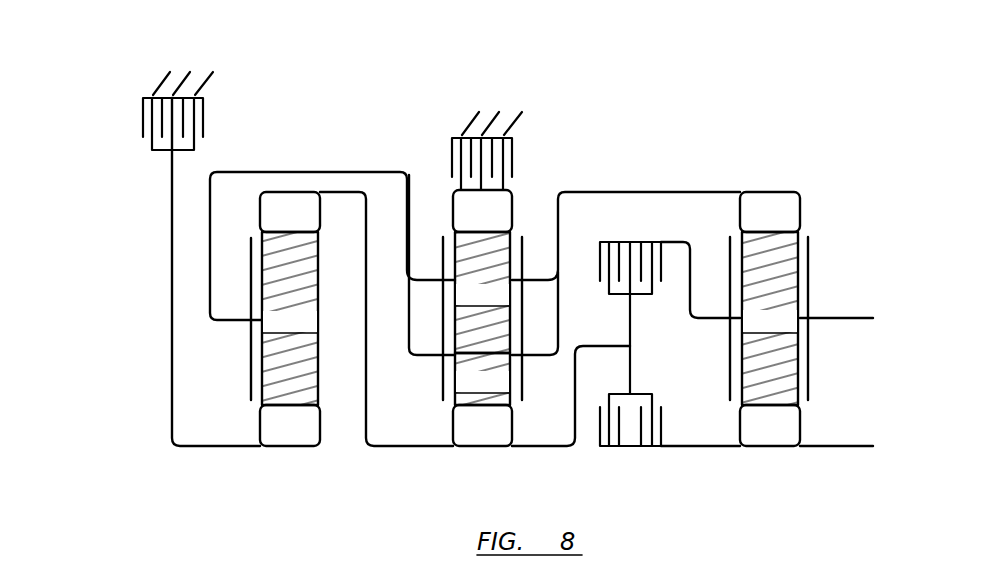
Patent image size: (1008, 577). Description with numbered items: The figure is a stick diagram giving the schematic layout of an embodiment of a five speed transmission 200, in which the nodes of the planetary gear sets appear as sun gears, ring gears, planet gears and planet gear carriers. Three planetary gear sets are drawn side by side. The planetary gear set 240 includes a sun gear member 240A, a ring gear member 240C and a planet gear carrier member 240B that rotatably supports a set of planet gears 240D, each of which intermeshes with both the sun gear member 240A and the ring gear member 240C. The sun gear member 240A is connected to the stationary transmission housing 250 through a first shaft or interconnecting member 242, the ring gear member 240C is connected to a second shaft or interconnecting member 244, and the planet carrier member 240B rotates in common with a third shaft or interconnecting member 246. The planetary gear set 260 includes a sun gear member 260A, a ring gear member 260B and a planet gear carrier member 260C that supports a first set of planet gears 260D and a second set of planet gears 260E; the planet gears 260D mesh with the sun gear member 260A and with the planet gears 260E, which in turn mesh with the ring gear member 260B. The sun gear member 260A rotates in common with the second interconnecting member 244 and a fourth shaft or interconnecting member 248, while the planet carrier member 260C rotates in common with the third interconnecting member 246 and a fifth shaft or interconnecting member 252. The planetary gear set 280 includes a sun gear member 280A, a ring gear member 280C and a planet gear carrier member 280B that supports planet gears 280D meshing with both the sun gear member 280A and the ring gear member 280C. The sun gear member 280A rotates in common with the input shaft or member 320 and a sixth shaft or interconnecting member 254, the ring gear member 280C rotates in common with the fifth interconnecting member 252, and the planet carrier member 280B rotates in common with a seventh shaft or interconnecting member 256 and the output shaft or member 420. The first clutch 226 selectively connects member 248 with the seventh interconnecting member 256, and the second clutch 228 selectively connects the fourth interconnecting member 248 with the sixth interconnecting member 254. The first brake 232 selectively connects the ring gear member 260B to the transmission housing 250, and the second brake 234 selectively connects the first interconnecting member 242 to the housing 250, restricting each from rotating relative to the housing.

The five speed transmission 200 is at (709, 119).
The first clutch 226 is at (601, 262).
The second clutch 228 is at (600, 430).
The first brake 232 is at (452, 148).
The second brake 234 is at (143, 112).
The planetary gear set 240 is at (243, 428).
The sun gear member 240A is at (292, 432).
The planet gear carrier member 240B is at (250, 333).
The ring gear member 240C is at (286, 205).
The planet gears 240D is at (290, 318).
The first shaft or interconnecting member 242 is at (170, 322).
The second shaft or interconnecting member 244 is at (360, 407).
The third shaft or interconnecting member 246 is at (250, 172).
The fourth shaft or interconnecting member 248 is at (541, 445).
The transmission housing 250 is at (183, 78).
The fifth shaft or interconnecting member 252 is at (690, 192).
The sixth shaft or interconnecting member 254 is at (690, 447).
The seventh shaft or interconnecting member 256 is at (692, 272).
The planetary gear set 260 is at (444, 464).
The sun gear member 260A is at (487, 432).
The ring gear member 260B is at (493, 215).
The planet gear carrier member 260C is at (522, 263).
The first set of planet gears 260D is at (482, 379).
The second set of planet gears 260E is at (482, 292).
The planetary gear set 280 is at (742, 466).
The sun gear member 280A is at (778, 432).
The planet gear carrier member 280B is at (730, 351).
The ring gear member 280C is at (779, 205).
The planet gears 280D is at (770, 318).
The input shaft or member 320 is at (851, 447).
The output shaft or member 420 is at (852, 320).